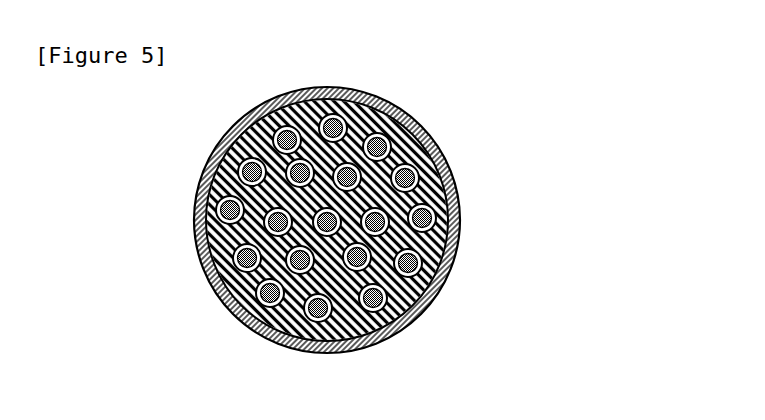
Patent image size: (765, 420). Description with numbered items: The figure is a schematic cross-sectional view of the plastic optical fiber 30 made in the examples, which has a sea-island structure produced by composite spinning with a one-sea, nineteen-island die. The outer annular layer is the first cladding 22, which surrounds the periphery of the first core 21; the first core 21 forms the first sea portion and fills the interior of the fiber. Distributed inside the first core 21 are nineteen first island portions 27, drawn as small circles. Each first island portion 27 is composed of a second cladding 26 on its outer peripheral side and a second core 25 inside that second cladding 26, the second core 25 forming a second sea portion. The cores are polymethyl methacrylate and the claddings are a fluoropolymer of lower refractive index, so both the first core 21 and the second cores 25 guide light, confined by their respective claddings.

The plastic optical fiber 30 is at (451, 220).
The first cladding 22 is at (435, 128).
The first core 21 is at (449, 148).
The first island portion 27 is at (427, 218).
The second cladding 26 is at (460, 190).
The second core 25 is at (433, 212).